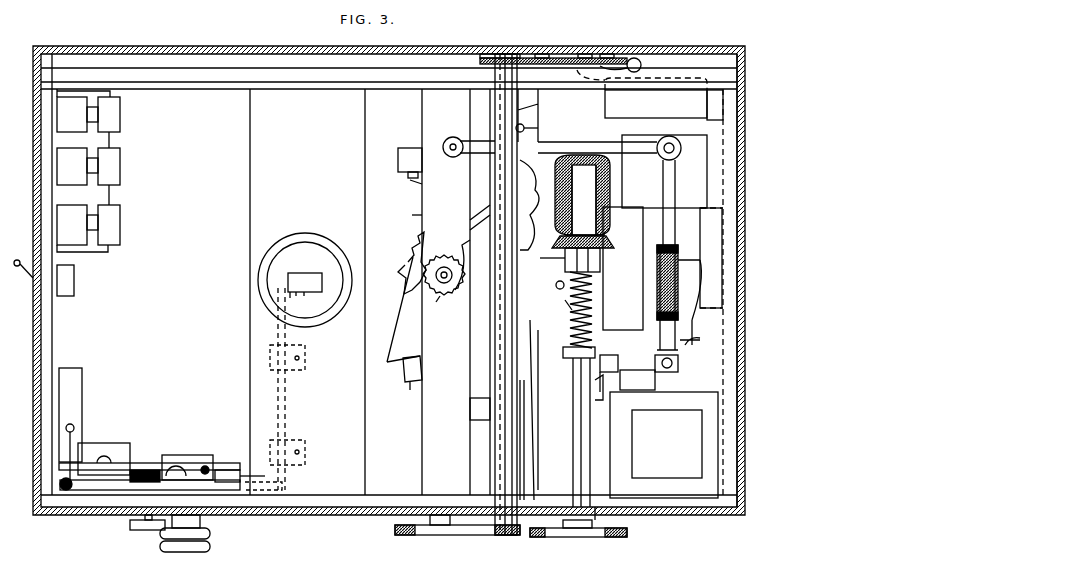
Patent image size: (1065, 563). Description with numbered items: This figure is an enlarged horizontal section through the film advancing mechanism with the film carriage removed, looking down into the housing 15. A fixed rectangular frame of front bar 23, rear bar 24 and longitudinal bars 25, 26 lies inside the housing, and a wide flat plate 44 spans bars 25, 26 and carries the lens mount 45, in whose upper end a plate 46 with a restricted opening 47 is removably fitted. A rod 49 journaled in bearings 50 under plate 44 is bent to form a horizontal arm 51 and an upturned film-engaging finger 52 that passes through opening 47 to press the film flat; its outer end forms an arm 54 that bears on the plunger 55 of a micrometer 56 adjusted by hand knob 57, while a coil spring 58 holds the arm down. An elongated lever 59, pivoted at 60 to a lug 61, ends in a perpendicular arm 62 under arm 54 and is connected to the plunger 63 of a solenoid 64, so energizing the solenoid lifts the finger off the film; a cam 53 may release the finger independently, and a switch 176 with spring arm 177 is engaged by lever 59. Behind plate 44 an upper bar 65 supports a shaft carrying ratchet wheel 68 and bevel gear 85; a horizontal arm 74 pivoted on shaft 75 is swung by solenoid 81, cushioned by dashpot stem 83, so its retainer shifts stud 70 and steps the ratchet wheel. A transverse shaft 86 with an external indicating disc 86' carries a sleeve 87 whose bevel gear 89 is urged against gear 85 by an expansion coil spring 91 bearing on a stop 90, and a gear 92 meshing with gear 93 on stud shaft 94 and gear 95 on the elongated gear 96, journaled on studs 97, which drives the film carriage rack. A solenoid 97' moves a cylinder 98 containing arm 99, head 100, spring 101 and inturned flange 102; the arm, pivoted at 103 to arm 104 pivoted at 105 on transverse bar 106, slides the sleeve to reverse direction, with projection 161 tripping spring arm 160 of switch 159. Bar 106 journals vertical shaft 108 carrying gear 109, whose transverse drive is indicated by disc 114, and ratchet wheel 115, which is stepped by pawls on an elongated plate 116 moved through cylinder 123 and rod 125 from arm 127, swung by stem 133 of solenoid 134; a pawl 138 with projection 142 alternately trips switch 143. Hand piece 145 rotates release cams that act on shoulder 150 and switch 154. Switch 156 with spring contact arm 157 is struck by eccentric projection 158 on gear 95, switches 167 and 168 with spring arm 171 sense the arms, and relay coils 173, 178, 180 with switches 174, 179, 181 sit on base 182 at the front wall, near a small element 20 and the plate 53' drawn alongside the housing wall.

The housing 15 is at (208, 48).
The switch lever 20 is at (74, 291).
The front bar 23 is at (52, 325).
The rear bar 24 is at (739, 342).
The longitudinal bar 25 is at (336, 495).
The longitudinal bar 26 is at (206, 89).
The wide flat plate 44 is at (250, 178).
The lens mount 45 is at (298, 234).
The plate 46 is at (318, 250).
The restricted opening 47 is at (310, 273).
The rod 49 is at (286, 392).
The bearings 50 is at (270, 356).
The horizontal arm 51 is at (298, 292).
The film-engaging finger 52 is at (316, 296).
The cam 53 is at (146, 460).
The plate 53' is at (146, 535).
The arm 54 is at (98, 490).
The plunger 55 is at (176, 466).
The micrometer 56 is at (195, 455).
The hand knob 57 is at (202, 527).
The coil spring 58 is at (66, 491).
The elongated lever 59 is at (138, 462).
The pivot 60 is at (206, 466).
The lug 61 is at (222, 470).
The perpendicular arm 62 is at (240, 474).
The plunger 63 is at (108, 458).
The solenoid 64 is at (95, 445).
The upper horizontal bar 65 is at (545, 258).
The ratchet wheel 68 is at (528, 215).
The vertical stud 70 is at (528, 126).
The horizontal arm 74 is at (540, 100).
The shaft 75 is at (558, 289).
The solenoid 81 is at (707, 145).
The stem 83 is at (612, 164).
The bevel gear 85 is at (612, 180).
The transverse shaft 86 is at (575, 389).
The indicating disc 86' is at (615, 531).
The sleeve 87 is at (602, 222).
The bevel gear 89 is at (606, 242).
The stop 90 is at (570, 358).
The expansion coil spring 91 is at (570, 328).
The gear 92 is at (610, 54).
The gear 93 is at (582, 54).
The stud shaft 94 is at (545, 54).
The gear 95 is at (480, 58).
The elongated gear 96 is at (470, 183).
The studs 97 is at (507, 281).
The solenoid 97' is at (667, 444).
The cylinder 98 is at (657, 270).
The arm 99 is at (676, 180).
The head 100 is at (657, 318).
The expansion coil spring 101 is at (657, 296).
The inturned flange 102 is at (669, 245).
The pivot 103 is at (672, 153).
The arm 104 is at (614, 142).
The pivot 105 is at (453, 137).
The transverse bar 106 is at (424, 218).
The vertical shaft 108 is at (446, 268).
The gear 109 is at (442, 295).
The indicating disc 114 is at (400, 535).
The ratchet wheel 115 is at (406, 258).
The elongated plate 116 is at (408, 318).
The cylinder 123 is at (408, 382).
The rod 125 is at (569, 306).
The arm 127 is at (533, 470).
The stem 133 is at (600, 390).
The solenoid 134 is at (700, 382).
The pawl 138 is at (470, 212).
The projection 142 is at (412, 182).
The switch 143 is at (398, 160).
The hand piece 145 is at (540, 537).
The shoulder 150 is at (536, 395).
The switch 154 is at (470, 413).
The switch 156 is at (723, 104).
The spring contact arm 157 is at (598, 70).
The eccentric projection 158 is at (638, 58).
The switch 159 is at (722, 254).
The spring arm 160 is at (688, 323).
The projection 161 is at (685, 341).
The switch 167 is at (634, 266).
The switch 168 is at (648, 360).
The spring arm 171 is at (600, 362).
The relay coil 173 is at (60, 224).
The switch 174 is at (116, 226).
The switch 176 is at (75, 392).
The spring arm 177 is at (62, 452).
The relay coil 178 is at (60, 170).
The double pole, single throw switch 179 is at (116, 170).
The relay coil 180 is at (57, 117).
The double pole, single throw switch 181 is at (116, 112).
The base 182 is at (92, 250).